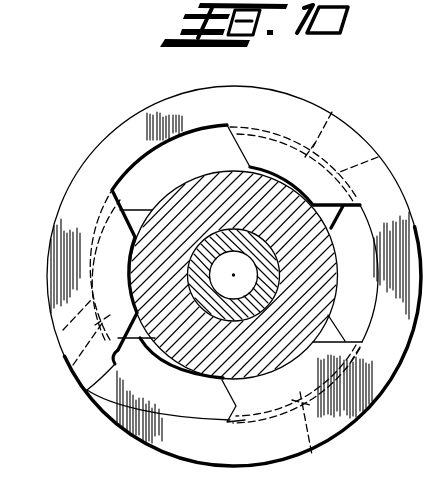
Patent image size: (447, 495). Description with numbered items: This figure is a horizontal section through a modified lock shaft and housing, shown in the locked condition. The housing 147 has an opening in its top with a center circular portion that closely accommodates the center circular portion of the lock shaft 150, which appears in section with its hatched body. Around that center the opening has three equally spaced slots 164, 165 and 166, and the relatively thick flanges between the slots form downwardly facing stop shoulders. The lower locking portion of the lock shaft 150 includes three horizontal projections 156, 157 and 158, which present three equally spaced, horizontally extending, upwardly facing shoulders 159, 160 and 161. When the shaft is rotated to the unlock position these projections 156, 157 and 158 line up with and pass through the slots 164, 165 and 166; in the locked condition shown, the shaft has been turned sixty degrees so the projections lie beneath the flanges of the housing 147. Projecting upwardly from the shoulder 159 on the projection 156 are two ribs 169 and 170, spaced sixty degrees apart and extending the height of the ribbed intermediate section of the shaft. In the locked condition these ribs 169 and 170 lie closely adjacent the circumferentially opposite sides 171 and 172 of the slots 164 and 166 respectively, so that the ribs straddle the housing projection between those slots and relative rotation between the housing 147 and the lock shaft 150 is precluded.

The housing 147 is at (367, 137).
The lock shaft 150 is at (339, 266).
The horizontal projection 156 is at (62, 337).
The horizontal projection 157 is at (378, 157).
The horizontal projection 158 is at (296, 414).
The shoulder 159 is at (70, 360).
The shoulder 160 is at (338, 107).
The shoulder 161 is at (264, 402).
The slot 164 is at (160, 163).
The slot 165 is at (363, 317).
The slot 166 is at (183, 395).
The rib 169 is at (137, 210).
The rib 170 is at (140, 340).
The circumferentially opposite side of slot 171 is at (124, 197).
The circumferentially opposite side of slot 172 is at (90, 394).